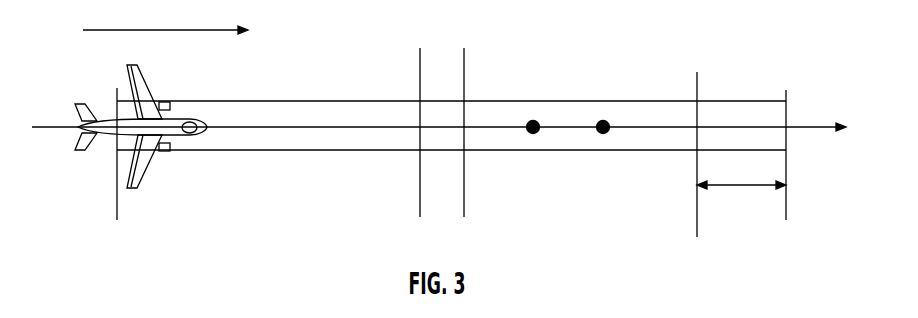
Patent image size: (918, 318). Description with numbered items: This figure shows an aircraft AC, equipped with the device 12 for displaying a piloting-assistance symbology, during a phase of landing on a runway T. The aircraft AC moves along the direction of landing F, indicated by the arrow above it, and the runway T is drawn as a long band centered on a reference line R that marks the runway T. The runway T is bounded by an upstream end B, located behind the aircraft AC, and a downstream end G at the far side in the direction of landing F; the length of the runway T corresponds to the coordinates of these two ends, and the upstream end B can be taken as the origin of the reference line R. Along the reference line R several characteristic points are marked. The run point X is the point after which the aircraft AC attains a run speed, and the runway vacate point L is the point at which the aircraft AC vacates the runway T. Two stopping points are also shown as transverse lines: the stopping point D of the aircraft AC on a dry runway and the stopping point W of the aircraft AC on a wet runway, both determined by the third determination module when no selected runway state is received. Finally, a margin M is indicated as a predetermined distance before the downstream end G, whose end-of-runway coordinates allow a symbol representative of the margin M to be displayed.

The device 12 is at (192, 116).
The aircraft AC is at (108, 132).
The direction of landing F is at (165, 17).
The runway T is at (298, 138).
The upstream end B is at (116, 167).
The stopping point on a dry runway D is at (420, 192).
The stopping point on a wet runway W is at (464, 192).
The run point X is at (531, 121).
The runway vacate point L is at (602, 121).
The margin M is at (741, 154).
The downstream end G is at (786, 168).
The reference line R is at (808, 127).